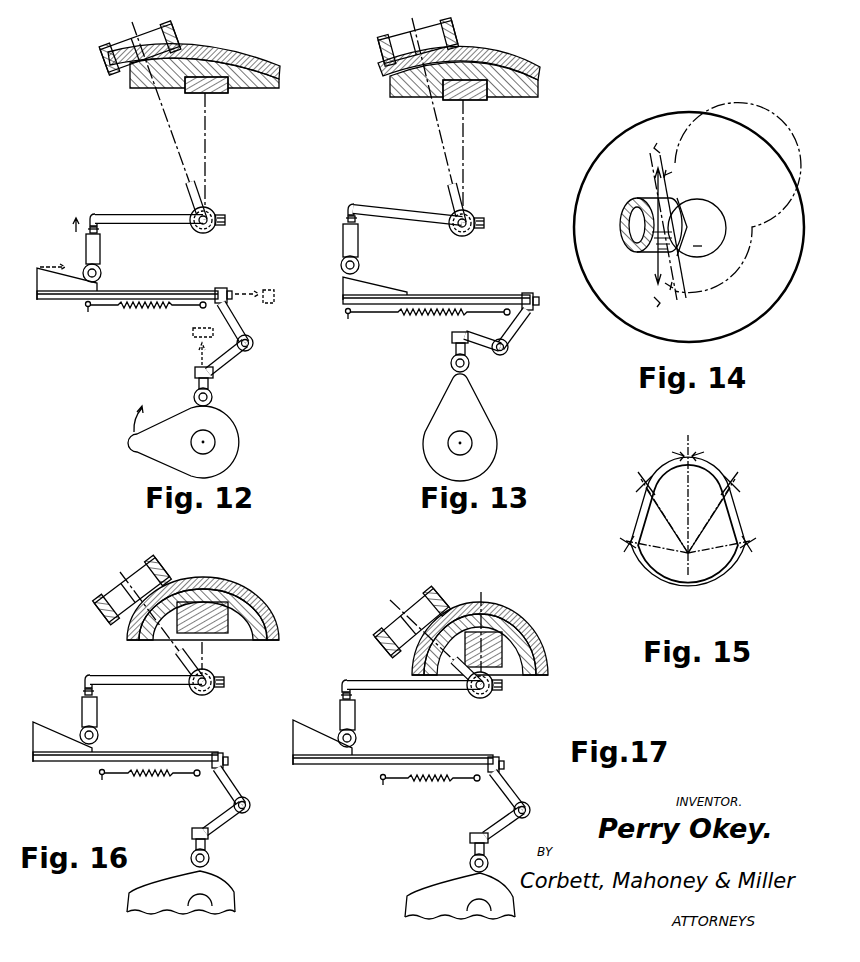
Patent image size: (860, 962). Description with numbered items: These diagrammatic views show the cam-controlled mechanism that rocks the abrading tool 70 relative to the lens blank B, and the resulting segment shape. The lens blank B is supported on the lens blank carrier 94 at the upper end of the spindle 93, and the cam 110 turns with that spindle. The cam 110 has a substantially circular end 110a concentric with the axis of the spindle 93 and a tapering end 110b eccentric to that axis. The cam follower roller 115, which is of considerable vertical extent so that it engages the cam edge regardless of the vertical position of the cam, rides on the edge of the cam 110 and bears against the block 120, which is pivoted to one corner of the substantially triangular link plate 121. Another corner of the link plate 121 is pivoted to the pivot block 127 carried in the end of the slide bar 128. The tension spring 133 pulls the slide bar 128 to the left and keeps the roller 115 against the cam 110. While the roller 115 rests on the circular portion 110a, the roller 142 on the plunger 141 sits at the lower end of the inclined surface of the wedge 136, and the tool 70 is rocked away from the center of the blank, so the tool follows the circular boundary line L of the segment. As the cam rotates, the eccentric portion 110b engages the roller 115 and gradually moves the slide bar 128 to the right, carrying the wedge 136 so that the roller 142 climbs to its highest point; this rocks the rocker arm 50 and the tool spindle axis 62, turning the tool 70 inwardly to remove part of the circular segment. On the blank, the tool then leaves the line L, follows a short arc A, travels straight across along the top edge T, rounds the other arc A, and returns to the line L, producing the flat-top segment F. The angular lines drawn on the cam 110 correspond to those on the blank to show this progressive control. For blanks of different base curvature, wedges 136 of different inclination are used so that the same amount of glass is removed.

In FIG. 12, the tool 70 is at (176, 35).
In FIG. 13, the tool 70 is at (455, 34).
In FIG. 14, the tool 70 is at (626, 200).
In FIG. 16, the tool 70 is at (156, 570).
In FIG. 17, the tool 70 is at (430, 595).
In FIG. 12, the tool spindle axis 62 is at (174, 138).
In FIG. 13, the tool spindle axis 62 is at (438, 124).
In FIG. 16, the tool spindle axis 62 is at (172, 653).
In FIG. 17, the tool spindle axis 62 is at (435, 642).
In FIG. 12, the lens blank B is at (244, 56).
In FIG. 13, the lens blank B is at (506, 59).
In FIG. 16, the lens blank B is at (255, 603).
In FIG. 17, the lens blank B is at (527, 628).
In FIG. 12, the lens blank carrier 94 is at (280, 86).
In FIG. 13, the lens blank carrier 94 is at (539, 87).
In FIG. 16, the lens blank carrier 94 is at (279, 632).
In FIG. 17, the lens blank carrier 94 is at (545, 662).
In FIG. 12, the spindle 93 is at (207, 120).
In FIG. 13, the spindle 93 is at (465, 137).
In FIG. 16, the spindle 93 is at (205, 664).
In FIG. 17, the spindle 93 is at (483, 591).
In FIG. 12, the rocker arm 50 is at (133, 213).
In FIG. 13, the rocker arm 50 is at (416, 210).
In FIG. 16, the rocker arm 50 is at (167, 689).
In FIG. 17, the rocker arm 50 is at (360, 681).
In FIG. 12, the plunger 141 is at (100, 240).
In FIG. 13, the plunger 141 is at (343, 236).
In FIG. 16, the plunger 141 is at (93, 715).
In FIG. 17, the plunger 141 is at (352, 717).
In FIG. 12, the roller 142 is at (101, 272).
In FIG. 13, the roller 142 is at (359, 265).
In FIG. 16, the roller 142 is at (89, 735).
In FIG. 17, the roller 142 is at (347, 738).
In FIG. 12, the wedge 136 is at (72, 298).
In FIG. 13, the wedge 136 is at (343, 285).
In FIG. 16, the wedge 136 is at (62, 742).
In FIG. 17, the wedge 136 is at (322, 742).
In FIG. 12, the slide bar 128 is at (157, 291).
In FIG. 13, the slide bar 128 is at (461, 294).
In FIG. 16, the slide bar 128 is at (133, 757).
In FIG. 17, the slide bar 128 is at (395, 759).
In FIG. 12, the spring 133 is at (130, 311).
In FIG. 13, the spring 133 is at (402, 316).
In FIG. 16, the spring 133 is at (134, 778).
In FIG. 17, the spring 133 is at (442, 783).
In FIG. 12, the pivot block 127 is at (220, 288).
In FIG. 13, the pivot block 127 is at (527, 293).
In FIG. 16, the pivot block 127 is at (217, 753).
In FIG. 17, the pivot block 127 is at (493, 757).
In FIG. 12, the link plate 121 is at (240, 325).
In FIG. 13, the link plate 121 is at (512, 333).
In FIG. 16, the link plate 121 is at (233, 796).
In FIG. 17, the link plate 121 is at (512, 796).
In FIG. 12, the block 120 is at (195, 374).
In FIG. 13, the block 120 is at (452, 341).
In FIG. 16, the block 120 is at (208, 834).
In FIG. 17, the block 120 is at (488, 838).
In FIG. 12, the cam follower roller 115 is at (212, 397).
In FIG. 13, the cam follower roller 115 is at (460, 363).
In FIG. 16, the cam follower roller 115 is at (209, 859).
In FIG. 17, the cam follower roller 115 is at (470, 863).
In FIG. 12, the cam 110 is at (222, 421).
In FIG. 13, the cam 110 is at (480, 418).
In FIG. 15, the cam 110 is at (663, 581).
In FIG. 16, the cam 110 is at (222, 888).
In FIG. 17, the cam 110 is at (444, 895).
In FIG. 15, the circular end of cam 110a is at (634, 560).
In FIG. 15, the tapering end of cam 110b is at (648, 506).
In FIG. 14, the top edge T is at (689, 201).
In FIG. 14, the flat-top segment F is at (697, 238).
In FIG. 14, the boundary line L is at (720, 242).
In FIG. 14, the short arcs A is at (668, 227).